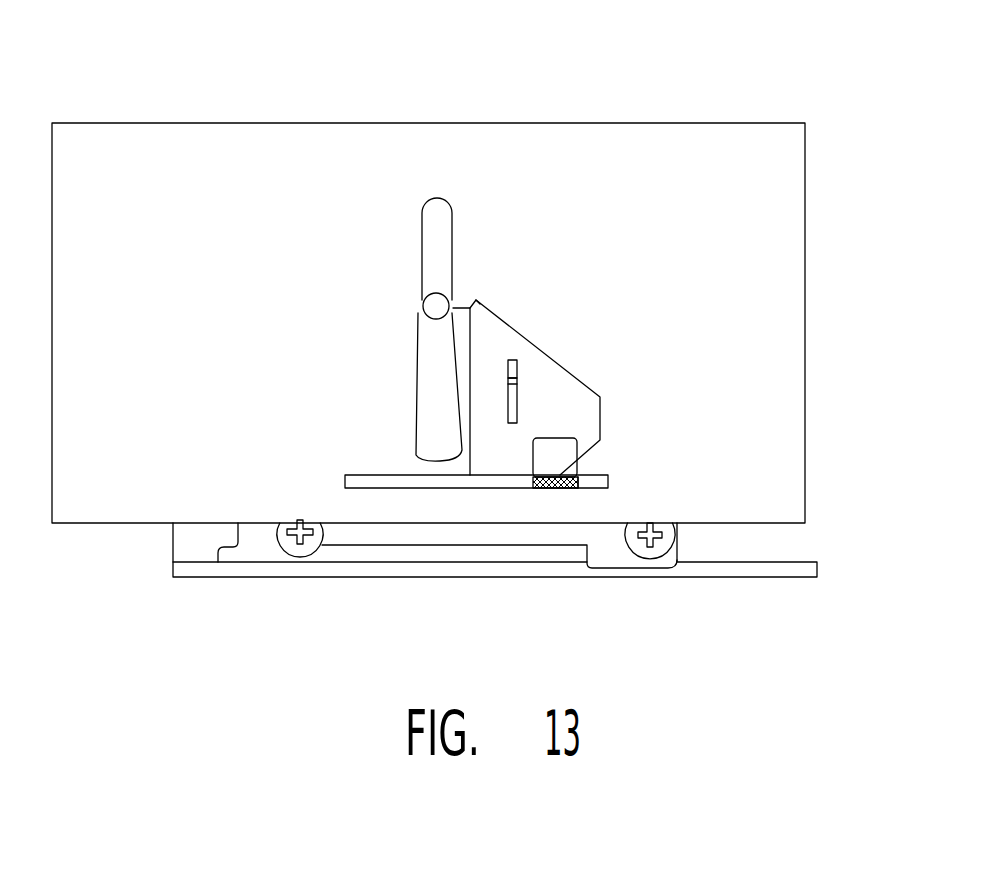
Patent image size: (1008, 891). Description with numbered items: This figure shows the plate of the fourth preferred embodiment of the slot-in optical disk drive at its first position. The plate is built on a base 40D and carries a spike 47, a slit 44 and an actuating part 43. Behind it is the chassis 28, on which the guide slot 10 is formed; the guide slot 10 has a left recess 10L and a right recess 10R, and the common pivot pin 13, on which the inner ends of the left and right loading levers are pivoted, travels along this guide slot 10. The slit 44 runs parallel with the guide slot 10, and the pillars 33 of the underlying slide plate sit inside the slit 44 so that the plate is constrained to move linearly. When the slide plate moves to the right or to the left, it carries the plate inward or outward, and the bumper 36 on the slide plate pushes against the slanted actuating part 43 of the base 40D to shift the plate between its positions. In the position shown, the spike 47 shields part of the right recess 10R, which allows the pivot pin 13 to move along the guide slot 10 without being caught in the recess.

The guide slot 10 is at (433, 218).
The left recess 10L is at (416, 309).
The right recess 10R is at (453, 303).
The pivot pin 13 is at (436, 306).
The spike 47 is at (474, 298).
The base 40D is at (498, 350).
The chassis 28 is at (748, 173).
The slit 44 is at (518, 367).
The pillars 33 is at (517, 381).
The actuating part 43 is at (553, 460).
The bumper 36 is at (577, 467).